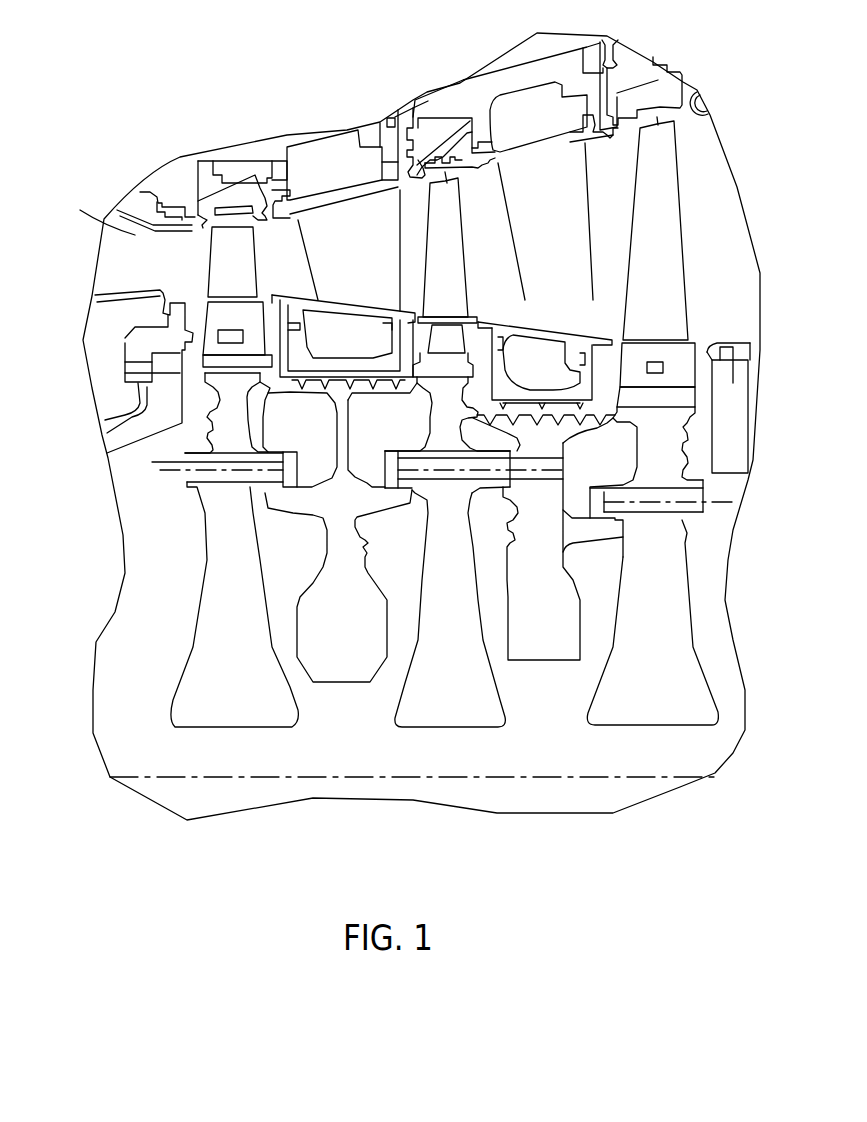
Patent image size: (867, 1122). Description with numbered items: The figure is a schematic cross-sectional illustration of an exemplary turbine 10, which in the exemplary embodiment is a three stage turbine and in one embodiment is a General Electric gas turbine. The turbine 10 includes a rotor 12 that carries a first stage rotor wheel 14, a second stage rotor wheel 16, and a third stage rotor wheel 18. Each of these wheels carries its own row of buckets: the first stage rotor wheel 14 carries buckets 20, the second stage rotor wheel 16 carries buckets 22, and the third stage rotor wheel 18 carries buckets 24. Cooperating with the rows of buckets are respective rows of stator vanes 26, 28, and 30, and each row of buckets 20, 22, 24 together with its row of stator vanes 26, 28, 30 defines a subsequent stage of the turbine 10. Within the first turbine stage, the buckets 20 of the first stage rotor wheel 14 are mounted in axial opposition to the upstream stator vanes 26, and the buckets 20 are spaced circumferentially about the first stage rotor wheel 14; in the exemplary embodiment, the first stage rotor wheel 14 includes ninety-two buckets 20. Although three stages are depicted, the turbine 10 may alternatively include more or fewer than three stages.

The turbine 10 is at (92, 465).
The rotor 12 is at (148, 620).
The first stage rotor wheel 14 is at (223, 700).
The second stage rotor wheel 16 is at (435, 700).
The third stage rotor wheel 18 is at (644, 700).
The buckets 20 is at (228, 257).
The buckets 22 is at (447, 237).
The buckets 24 is at (663, 283).
The stator vanes 26 is at (131, 233).
The stator vanes 28 is at (352, 277).
The stator vanes 30 is at (539, 219).